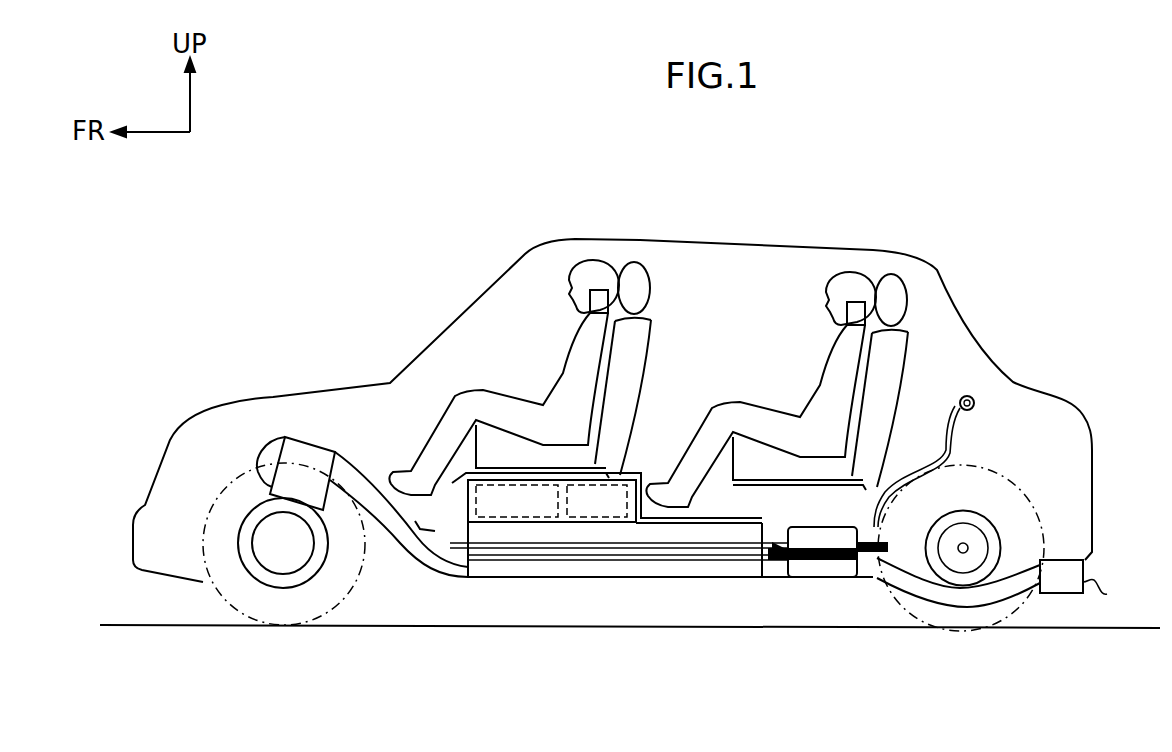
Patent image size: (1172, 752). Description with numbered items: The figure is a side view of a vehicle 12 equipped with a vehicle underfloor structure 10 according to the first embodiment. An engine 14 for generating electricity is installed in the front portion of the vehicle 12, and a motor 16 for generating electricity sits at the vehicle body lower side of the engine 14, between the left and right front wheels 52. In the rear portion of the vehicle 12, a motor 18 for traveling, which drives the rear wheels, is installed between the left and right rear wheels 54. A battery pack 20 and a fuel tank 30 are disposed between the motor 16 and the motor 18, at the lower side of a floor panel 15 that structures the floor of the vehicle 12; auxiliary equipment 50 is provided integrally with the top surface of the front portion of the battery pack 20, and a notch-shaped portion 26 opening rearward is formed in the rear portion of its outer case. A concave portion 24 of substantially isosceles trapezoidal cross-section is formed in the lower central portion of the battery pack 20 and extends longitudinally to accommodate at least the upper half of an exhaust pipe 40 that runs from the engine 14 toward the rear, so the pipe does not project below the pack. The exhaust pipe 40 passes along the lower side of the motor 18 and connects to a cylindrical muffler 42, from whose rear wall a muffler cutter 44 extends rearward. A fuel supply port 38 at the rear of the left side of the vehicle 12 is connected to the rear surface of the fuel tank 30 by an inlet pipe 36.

The vehicle underfloor structure 10 is at (834, 584).
The vehicle 12 is at (874, 250).
The engine 14 is at (279, 437).
The floor panel 15 is at (617, 472).
The motor for generating electricity 16 is at (278, 555).
The motor for traveling 18 is at (963, 563).
The battery pack 20 is at (623, 528).
The concave portion 24 is at (663, 567).
The notch-shaped portion 26 is at (878, 537).
The fuel tank 30 is at (810, 540).
The inlet pipe 36 is at (910, 462).
The fuel supply port 38 is at (973, 402).
The exhaust pipe 40 is at (722, 569).
The muffler 42 is at (1065, 587).
The muffler cutter 44 is at (1100, 594).
The auxiliary equipment 50 is at (605, 508).
The front wheels 52 is at (335, 605).
The rear wheels 54 is at (1020, 607).